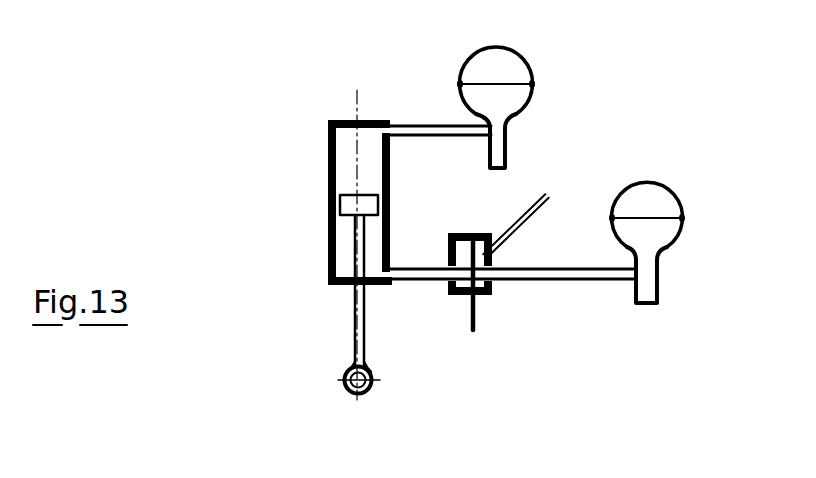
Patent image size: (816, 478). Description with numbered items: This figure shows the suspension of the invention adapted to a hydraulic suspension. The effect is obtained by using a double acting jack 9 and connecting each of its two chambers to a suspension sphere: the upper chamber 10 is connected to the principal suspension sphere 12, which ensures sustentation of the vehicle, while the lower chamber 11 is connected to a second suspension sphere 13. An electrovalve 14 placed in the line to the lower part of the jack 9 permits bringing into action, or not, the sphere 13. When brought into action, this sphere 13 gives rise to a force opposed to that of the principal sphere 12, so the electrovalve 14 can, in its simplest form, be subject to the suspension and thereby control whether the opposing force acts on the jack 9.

The double acting jack 9 is at (332, 223).
The upper chamber 10 is at (345, 162).
The lower chamber 11 is at (345, 248).
The principal suspension sphere 12 is at (514, 73).
The suspension sphere 13 is at (631, 194).
The electrovalve 14 is at (492, 282).